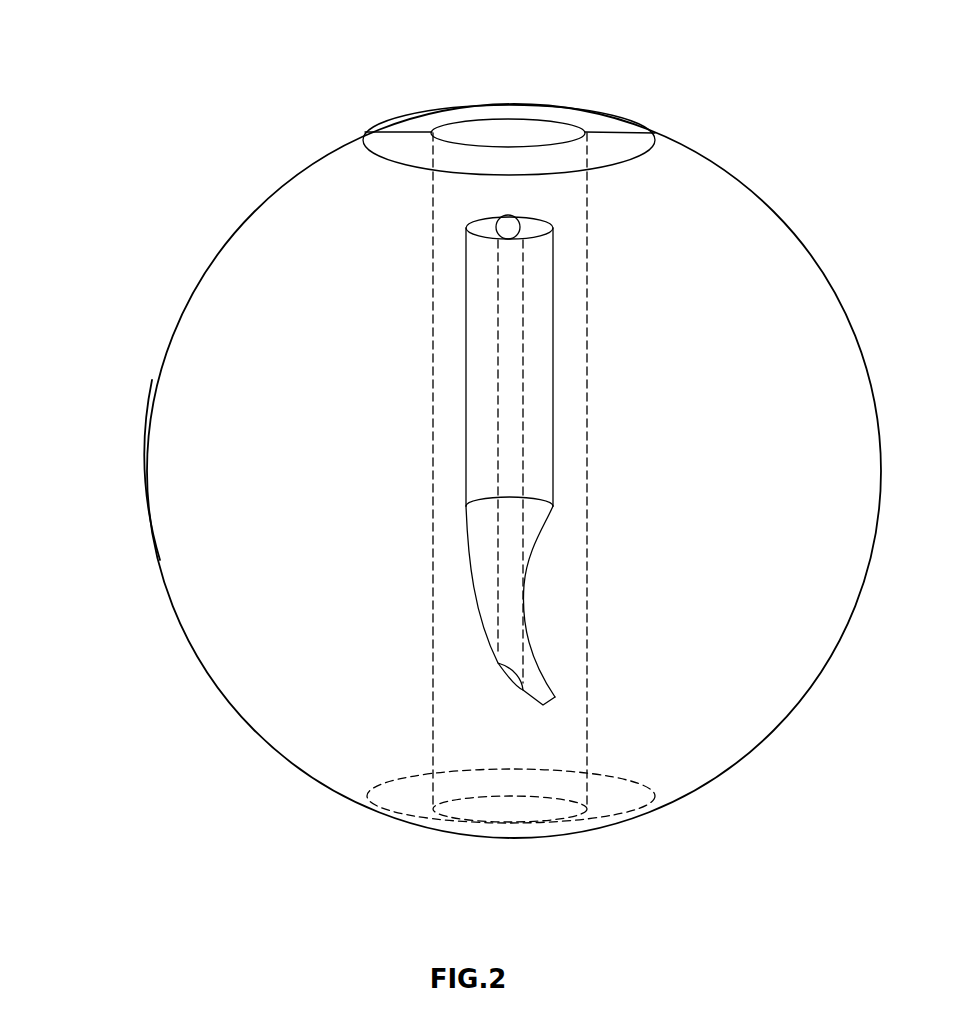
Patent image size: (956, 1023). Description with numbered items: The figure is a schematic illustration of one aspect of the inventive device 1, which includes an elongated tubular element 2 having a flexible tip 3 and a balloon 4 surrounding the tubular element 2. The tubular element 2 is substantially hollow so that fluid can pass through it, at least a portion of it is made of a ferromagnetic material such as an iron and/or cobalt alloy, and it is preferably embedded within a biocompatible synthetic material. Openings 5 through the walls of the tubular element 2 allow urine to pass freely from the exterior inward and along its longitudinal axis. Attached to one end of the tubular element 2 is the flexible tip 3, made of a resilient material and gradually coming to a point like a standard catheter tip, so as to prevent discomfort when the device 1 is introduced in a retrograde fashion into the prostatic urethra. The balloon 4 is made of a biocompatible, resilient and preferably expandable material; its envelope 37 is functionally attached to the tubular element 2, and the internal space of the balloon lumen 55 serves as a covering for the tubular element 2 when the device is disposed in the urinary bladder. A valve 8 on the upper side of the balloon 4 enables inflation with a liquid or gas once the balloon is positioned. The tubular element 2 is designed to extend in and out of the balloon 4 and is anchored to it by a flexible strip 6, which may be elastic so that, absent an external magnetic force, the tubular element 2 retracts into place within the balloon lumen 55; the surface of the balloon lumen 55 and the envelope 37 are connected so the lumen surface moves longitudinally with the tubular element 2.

The device 1 is at (818, 240).
The elongated tubular element 2 is at (463, 282).
The flexible tip 3 is at (470, 585).
The balloon 4 is at (268, 223).
The openings 5 is at (517, 218).
The flexible strip 6 is at (432, 225).
The valve 8 is at (430, 123).
The envelope 37 is at (187, 293).
The balloon lumen 55 is at (450, 732).